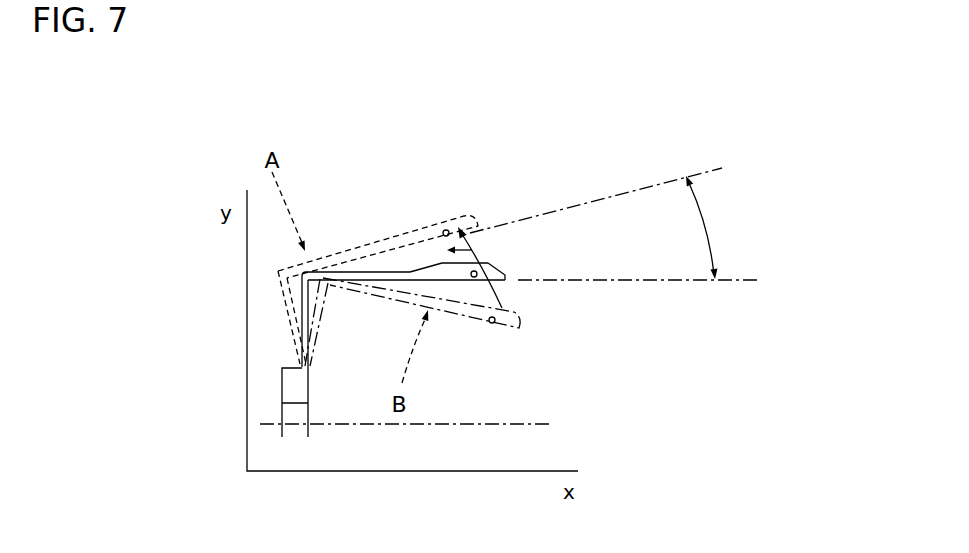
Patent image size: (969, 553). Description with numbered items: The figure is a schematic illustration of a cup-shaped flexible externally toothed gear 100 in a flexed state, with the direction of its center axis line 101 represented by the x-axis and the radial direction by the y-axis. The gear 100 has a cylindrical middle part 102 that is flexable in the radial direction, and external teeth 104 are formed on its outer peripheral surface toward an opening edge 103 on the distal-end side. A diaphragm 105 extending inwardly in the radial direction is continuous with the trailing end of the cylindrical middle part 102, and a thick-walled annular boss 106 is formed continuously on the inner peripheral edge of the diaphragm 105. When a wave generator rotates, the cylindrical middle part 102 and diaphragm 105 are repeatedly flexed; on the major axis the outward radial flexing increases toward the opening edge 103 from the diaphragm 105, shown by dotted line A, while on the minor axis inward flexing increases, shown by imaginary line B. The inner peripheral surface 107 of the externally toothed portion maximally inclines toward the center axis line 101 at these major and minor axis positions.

The flexible externally toothed gear 100 is at (386, 210).
The center axis line 101 is at (520, 423).
The cylindrical middle part 102 is at (373, 270).
The opening edge 103 is at (505, 273).
The external teeth 104 is at (443, 268).
The diaphragm 105 is at (310, 313).
The thick-walled annular boss 106 is at (298, 385).
The inner peripheral surface 107 is at (485, 279).